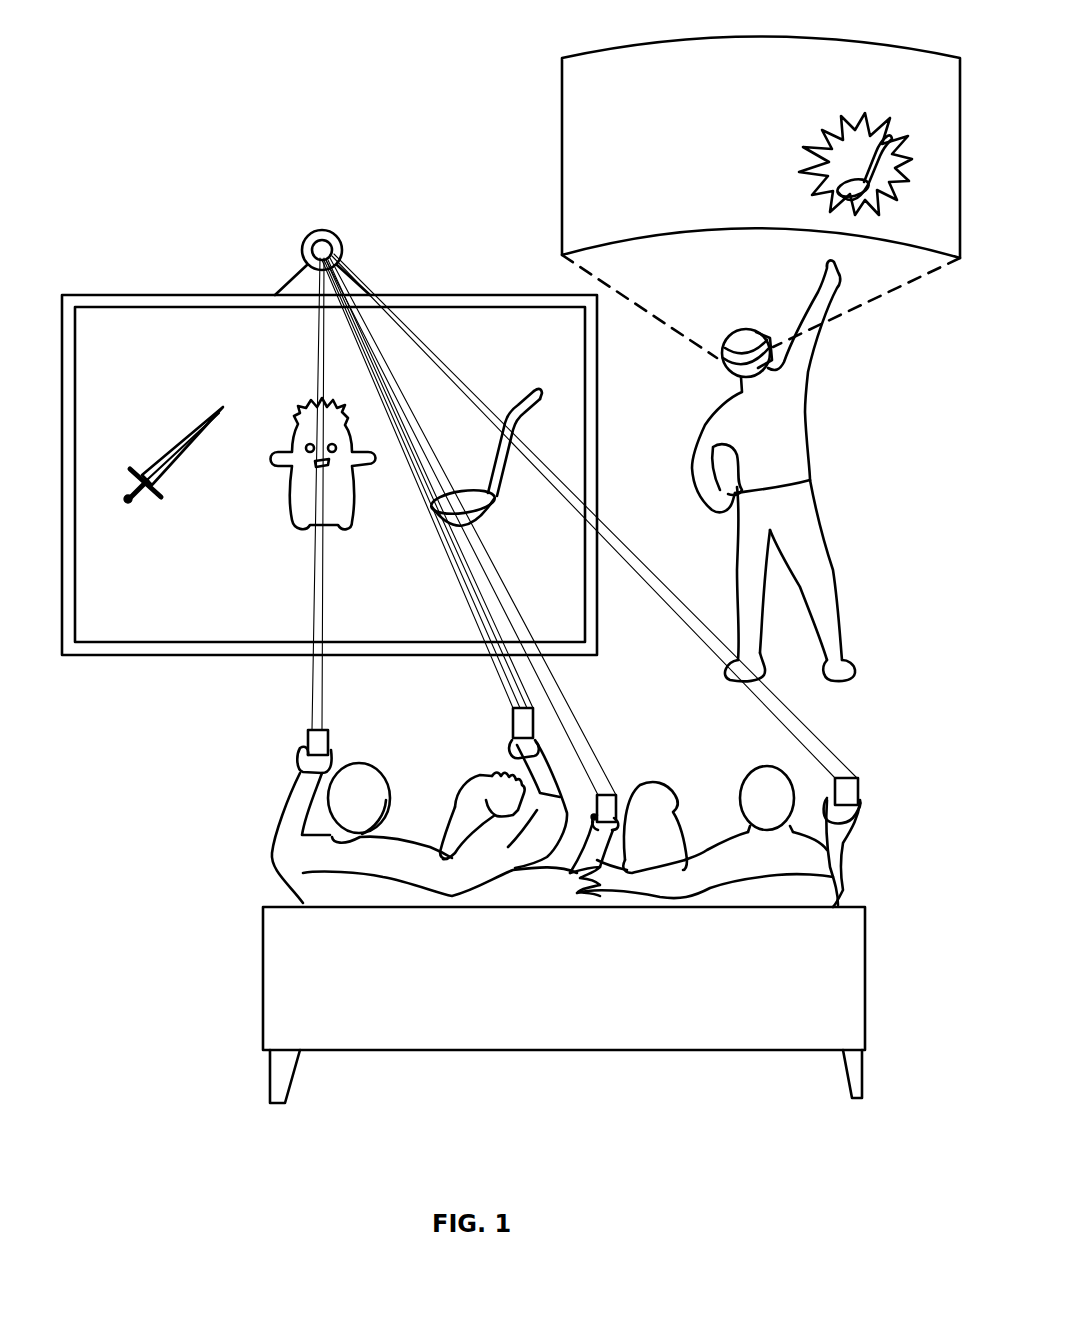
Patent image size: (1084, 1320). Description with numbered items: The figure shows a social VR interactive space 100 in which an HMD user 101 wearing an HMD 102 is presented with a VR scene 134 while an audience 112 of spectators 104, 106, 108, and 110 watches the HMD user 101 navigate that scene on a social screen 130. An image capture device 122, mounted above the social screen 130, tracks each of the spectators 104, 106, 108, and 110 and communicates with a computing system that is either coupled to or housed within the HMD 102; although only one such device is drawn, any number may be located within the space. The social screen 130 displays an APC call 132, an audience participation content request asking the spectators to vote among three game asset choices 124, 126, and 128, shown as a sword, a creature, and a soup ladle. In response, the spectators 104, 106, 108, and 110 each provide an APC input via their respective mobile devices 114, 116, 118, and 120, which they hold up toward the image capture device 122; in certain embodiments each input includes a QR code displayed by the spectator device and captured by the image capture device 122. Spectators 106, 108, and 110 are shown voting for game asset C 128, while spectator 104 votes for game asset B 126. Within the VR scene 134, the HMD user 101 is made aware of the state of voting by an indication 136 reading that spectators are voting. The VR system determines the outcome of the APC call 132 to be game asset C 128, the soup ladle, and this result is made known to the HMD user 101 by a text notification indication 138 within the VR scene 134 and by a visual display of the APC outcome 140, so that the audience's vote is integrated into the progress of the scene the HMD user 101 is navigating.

The social VR interactive space 100 is at (262, 150).
The HMD user 101 is at (808, 430).
The HMD 102 is at (757, 327).
The spectator 104 is at (838, 870).
The spectator 106 is at (683, 790).
The spectator 108 is at (462, 787).
The spectator 110 is at (273, 830).
The audience 112 is at (135, 749).
The mobile device 114 is at (890, 774).
The mobile device 116 is at (627, 751).
The mobile device 118 is at (475, 713).
The mobile device 120 is at (258, 712).
The image capture device 122 is at (305, 239).
The game asset choice 124 is at (153, 419).
The game asset B 126 is at (273, 417).
The game asset C 128 is at (470, 432).
The social screen 130 is at (192, 294).
The APC call 132 is at (126, 341).
The VR scene 134 is at (562, 116).
The indication 136 is at (588, 68).
The indication 138 is at (593, 179).
The APC outcome 140 is at (878, 110).